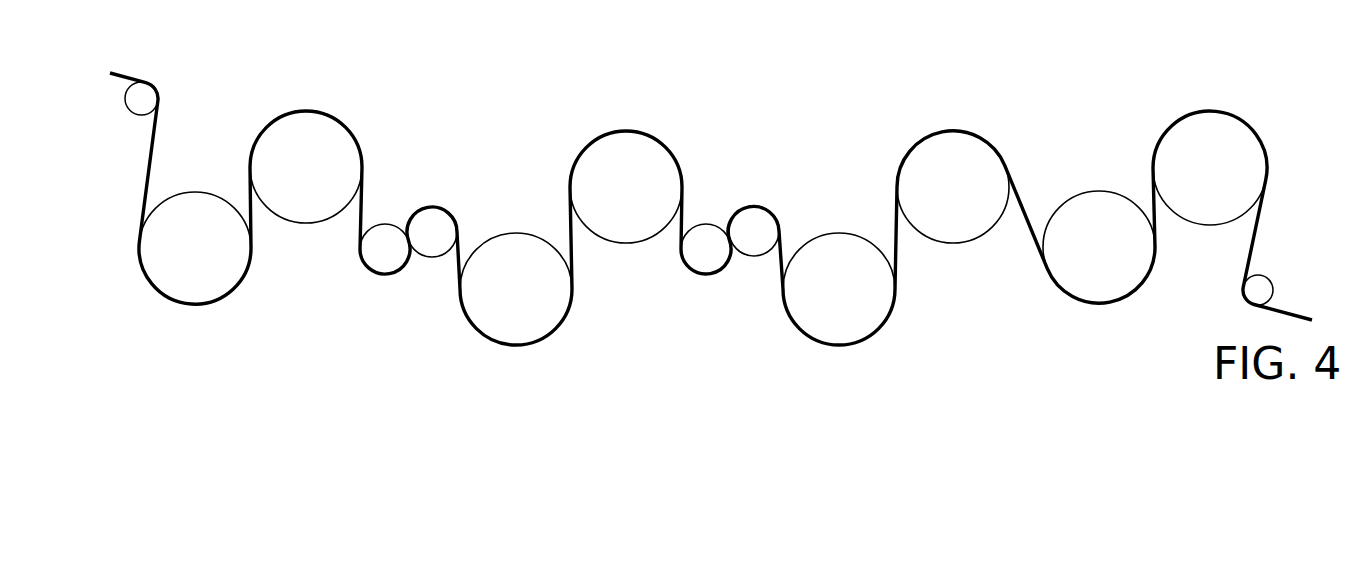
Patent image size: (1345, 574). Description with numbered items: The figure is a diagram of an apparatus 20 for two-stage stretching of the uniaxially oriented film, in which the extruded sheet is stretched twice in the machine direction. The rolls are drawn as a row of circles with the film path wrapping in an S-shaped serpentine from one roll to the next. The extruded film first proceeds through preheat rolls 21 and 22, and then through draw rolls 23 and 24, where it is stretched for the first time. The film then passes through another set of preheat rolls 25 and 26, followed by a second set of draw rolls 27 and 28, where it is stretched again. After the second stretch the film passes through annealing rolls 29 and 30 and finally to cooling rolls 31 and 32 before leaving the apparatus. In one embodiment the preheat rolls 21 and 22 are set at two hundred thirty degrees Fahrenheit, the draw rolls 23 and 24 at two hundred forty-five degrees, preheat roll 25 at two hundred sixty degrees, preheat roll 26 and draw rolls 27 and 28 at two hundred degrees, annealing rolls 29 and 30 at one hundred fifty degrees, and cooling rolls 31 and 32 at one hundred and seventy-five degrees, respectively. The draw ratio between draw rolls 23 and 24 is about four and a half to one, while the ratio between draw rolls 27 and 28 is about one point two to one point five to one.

The apparatus 20 is at (388, 70).
The preheat roll 21 is at (193, 306).
The preheat roll 22 is at (305, 240).
The draw roll 23 is at (385, 280).
The draw roll 24 is at (431, 268).
The preheat roll 25 is at (515, 348).
The preheat roll 26 is at (630, 252).
The draw roll 27 is at (705, 278).
The draw roll 28 is at (750, 263).
The annealing roll 29 is at (844, 349).
The annealing roll 30 is at (962, 249).
The cooling roll 31 is at (1108, 305).
The cooling roll 32 is at (1208, 230).